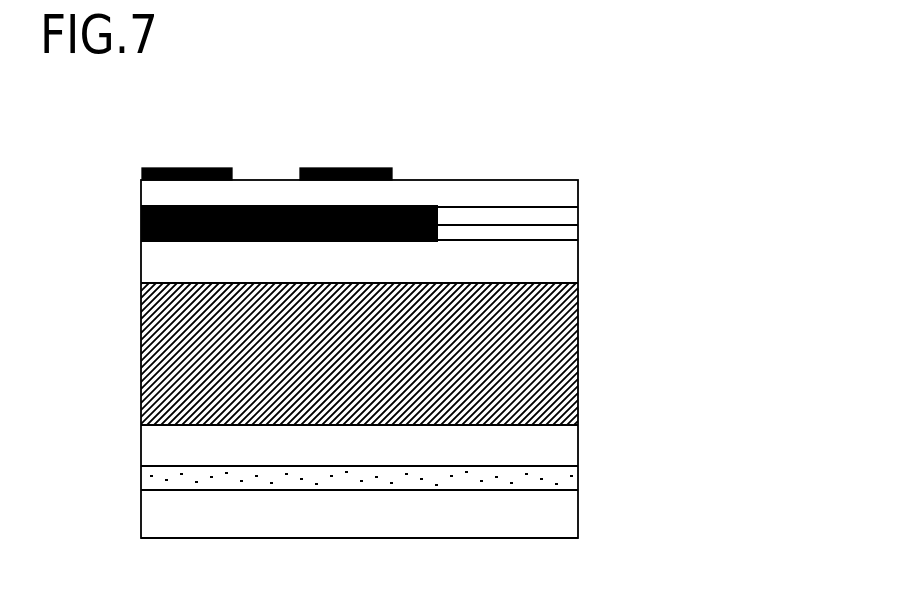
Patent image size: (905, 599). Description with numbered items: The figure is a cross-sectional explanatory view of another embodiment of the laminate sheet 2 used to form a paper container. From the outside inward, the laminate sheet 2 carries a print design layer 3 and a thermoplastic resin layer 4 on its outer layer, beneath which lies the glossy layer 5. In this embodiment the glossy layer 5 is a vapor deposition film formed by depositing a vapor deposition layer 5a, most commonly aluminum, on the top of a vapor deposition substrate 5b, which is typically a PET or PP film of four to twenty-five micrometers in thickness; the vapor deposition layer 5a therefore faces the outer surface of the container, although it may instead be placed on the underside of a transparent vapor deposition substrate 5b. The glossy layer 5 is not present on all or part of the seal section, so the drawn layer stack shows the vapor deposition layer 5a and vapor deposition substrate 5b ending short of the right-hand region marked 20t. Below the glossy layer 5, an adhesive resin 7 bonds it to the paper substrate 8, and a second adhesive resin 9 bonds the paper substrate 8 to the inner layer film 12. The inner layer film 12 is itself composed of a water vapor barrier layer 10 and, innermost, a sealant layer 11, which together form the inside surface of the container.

The laminate sheet 2 is at (136, 150).
The print design layer 3 is at (222, 166).
The thermoplastic resin layer 4 is at (557, 193).
The glossy layer 5 is at (460, 224).
The vapor deposition layer 5a is at (578, 207).
The vapor deposition substrate 5b is at (578, 225).
The adhesive resin 7 is at (557, 263).
The paper substrate 8 is at (578, 348).
The adhesive resin 9 is at (541, 443).
The water vapor barrier layer 10 is at (578, 474).
The sealant layer 11 is at (555, 522).
The inner layer film 12 is at (748, 490).
The width of region 20t is at (578, 162).